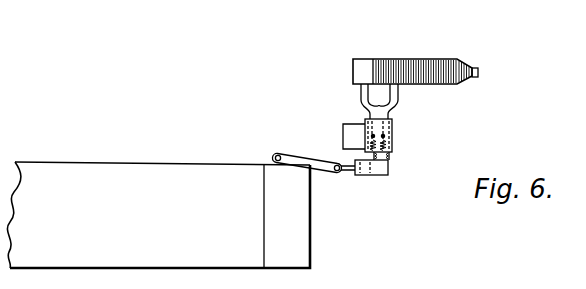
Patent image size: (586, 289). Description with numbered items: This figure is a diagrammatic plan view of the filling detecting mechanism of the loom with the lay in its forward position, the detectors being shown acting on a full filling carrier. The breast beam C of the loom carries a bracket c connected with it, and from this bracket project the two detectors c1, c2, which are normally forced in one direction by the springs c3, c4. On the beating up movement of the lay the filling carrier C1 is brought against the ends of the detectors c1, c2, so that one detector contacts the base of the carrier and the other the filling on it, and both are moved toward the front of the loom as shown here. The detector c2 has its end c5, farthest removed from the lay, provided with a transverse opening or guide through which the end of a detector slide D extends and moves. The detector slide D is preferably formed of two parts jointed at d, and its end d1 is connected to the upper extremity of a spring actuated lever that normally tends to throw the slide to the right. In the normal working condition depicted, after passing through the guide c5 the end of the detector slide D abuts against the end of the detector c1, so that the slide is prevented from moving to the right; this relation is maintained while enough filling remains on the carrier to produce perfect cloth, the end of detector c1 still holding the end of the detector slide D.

The breast beam C is at (158, 215).
The filling carrier C1 is at (433, 58).
The detector slide D is at (300, 158).
The joint d is at (338, 172).
The end of detector slide d1 is at (276, 156).
The bracket c is at (355, 122).
The detector c1 is at (399, 103).
The detector c2 is at (360, 95).
The spring c3 is at (392, 153).
The spring c4 is at (361, 142).
The end of detector c5 is at (364, 176).